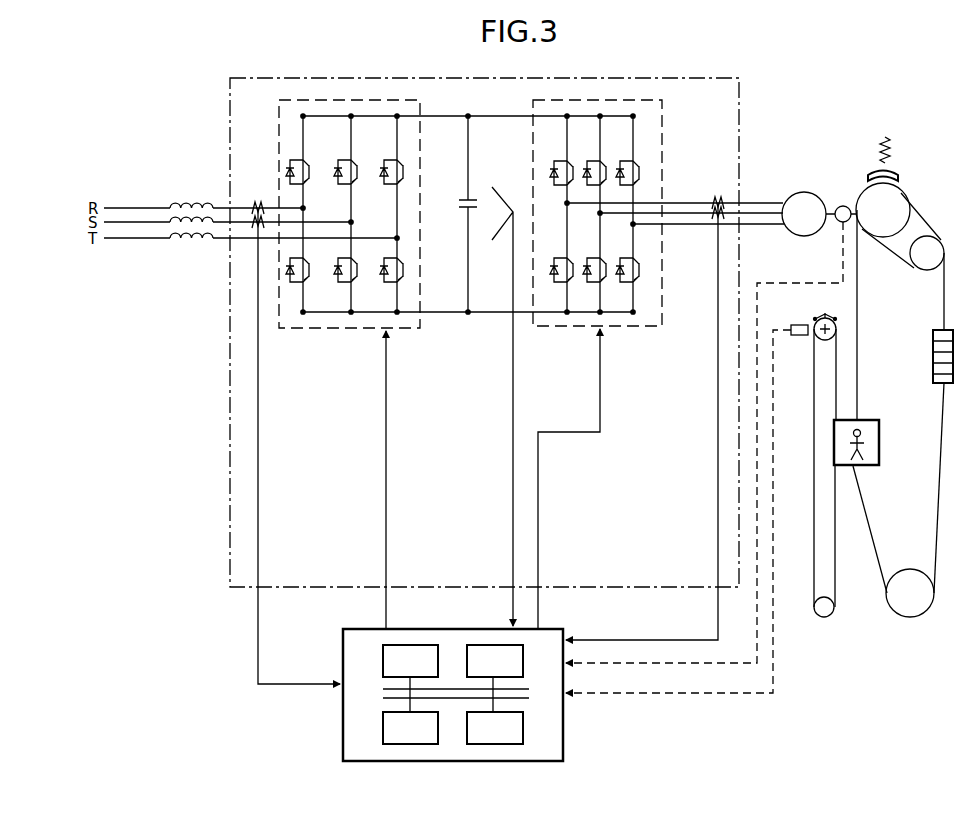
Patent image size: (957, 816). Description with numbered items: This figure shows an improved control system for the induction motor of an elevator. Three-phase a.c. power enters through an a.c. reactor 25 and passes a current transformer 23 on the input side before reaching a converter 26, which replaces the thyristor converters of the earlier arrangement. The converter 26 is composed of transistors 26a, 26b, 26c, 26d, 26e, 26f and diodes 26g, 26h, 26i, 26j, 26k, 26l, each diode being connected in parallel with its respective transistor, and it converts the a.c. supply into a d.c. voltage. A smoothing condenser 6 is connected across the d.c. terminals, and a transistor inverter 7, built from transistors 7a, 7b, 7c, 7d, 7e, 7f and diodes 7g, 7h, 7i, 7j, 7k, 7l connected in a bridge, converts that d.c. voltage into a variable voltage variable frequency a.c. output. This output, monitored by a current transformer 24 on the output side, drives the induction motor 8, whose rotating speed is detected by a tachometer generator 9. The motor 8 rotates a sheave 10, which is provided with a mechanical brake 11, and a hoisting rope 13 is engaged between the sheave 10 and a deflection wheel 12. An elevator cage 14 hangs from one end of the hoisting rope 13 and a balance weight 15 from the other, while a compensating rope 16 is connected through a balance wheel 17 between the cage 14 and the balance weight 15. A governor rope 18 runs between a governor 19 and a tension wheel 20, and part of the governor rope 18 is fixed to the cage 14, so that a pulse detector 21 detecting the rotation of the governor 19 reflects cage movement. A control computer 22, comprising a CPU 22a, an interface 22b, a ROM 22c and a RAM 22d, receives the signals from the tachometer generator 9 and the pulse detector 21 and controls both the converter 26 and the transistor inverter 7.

The smoothing condenser 6 is at (470, 200).
The transistor inverter 7 is at (532, 106).
The transistor 7a is at (567, 170).
The transistor 7b is at (600, 170).
The transistor 7c is at (633, 170).
The transistor 7d is at (568, 268).
The transistor 7e is at (601, 268).
The transistor 7f is at (634, 268).
The diode 7g is at (552, 184).
The diode 7h is at (586, 184).
The diode 7i is at (619, 184).
The diode 7j is at (552, 282).
The diode 7k is at (586, 282).
The diode 7l is at (619, 282).
The induction motor 8 is at (806, 192).
The tachometer generator 9 is at (843, 206).
The sheave 10 is at (903, 195).
The mechanical brake 11 is at (884, 143).
The deflection wheel 12 is at (922, 268).
The hoisting rope 13 is at (858, 330).
The elevator cage 14 is at (880, 436).
The balance weight 15 is at (934, 332).
The compensating rope 16 is at (873, 530).
The balance wheel 17 is at (912, 617).
The governor rope 18 is at (812, 562).
The governor 19 is at (815, 338).
The tension wheel 20 is at (828, 617).
The pulse detector 21 is at (800, 324).
The control computer 22 is at (565, 632).
The CPU 22a is at (381, 660).
The interface 22b is at (525, 660).
The ROM 22c is at (381, 736).
The RAM 22d is at (525, 736).
The current transformer 23 is at (258, 208).
The current transformer 24 is at (716, 202).
The a.c. reactor 25 is at (192, 202).
The converter 26 is at (421, 106).
The transistor 26a is at (345, 168).
The transistor 26b is at (392, 168).
The transistor 26c is at (404, 172).
The transistor 26d is at (309, 284).
The transistor 26e is at (357, 284).
The transistor 26f is at (403, 284).
The diode 26g is at (290, 170).
The diode 26h is at (338, 184).
The diode 26i is at (384, 184).
The diode 26j is at (290, 283).
The diode 26k is at (338, 281).
The diode 26l is at (384, 281).